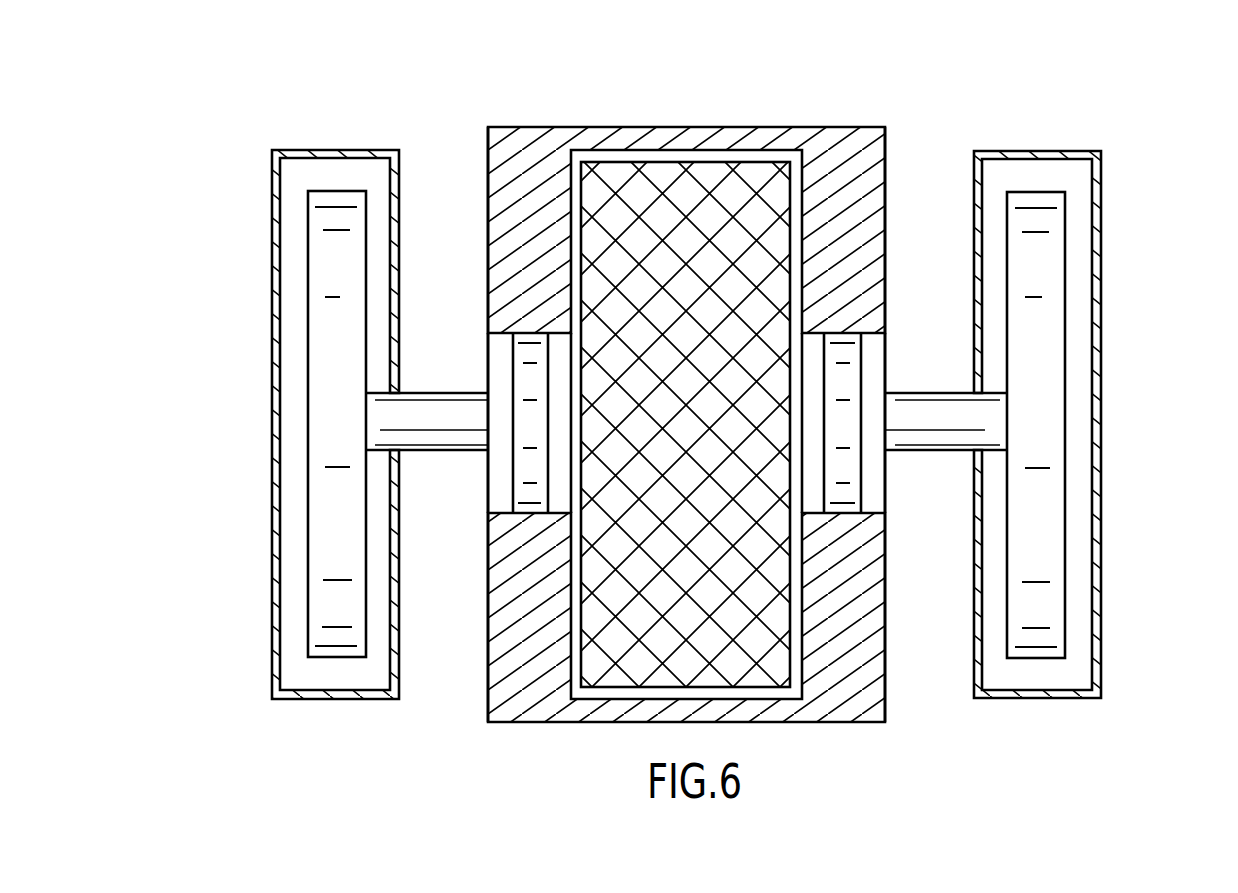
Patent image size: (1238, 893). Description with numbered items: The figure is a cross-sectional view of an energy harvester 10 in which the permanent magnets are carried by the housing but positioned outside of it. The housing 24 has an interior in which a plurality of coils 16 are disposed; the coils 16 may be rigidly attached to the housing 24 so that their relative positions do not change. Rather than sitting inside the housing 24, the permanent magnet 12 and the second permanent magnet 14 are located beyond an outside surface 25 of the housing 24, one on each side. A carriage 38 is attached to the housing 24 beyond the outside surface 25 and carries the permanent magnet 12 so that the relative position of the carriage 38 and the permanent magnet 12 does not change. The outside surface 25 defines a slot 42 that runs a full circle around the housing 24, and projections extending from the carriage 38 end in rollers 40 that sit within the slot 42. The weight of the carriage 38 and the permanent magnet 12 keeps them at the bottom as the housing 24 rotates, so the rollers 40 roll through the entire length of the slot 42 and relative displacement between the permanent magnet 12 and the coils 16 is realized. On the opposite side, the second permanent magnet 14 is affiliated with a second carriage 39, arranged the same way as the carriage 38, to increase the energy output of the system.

The energy harvester 10 is at (1140, 126).
The permanent magnet 12 is at (307, 493).
The second permanent magnet 14 is at (1038, 418).
The coils 16 is at (690, 453).
The housing 24 is at (826, 127).
The outside surface 25 is at (484, 190).
The carriage 38 is at (272, 358).
The second carriage 39 is at (1078, 699).
The rollers 40 is at (520, 467).
The slot 42 is at (502, 378).